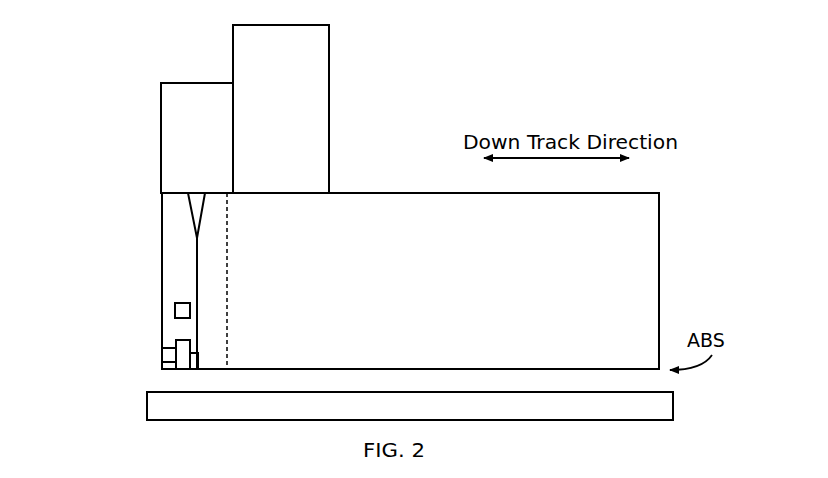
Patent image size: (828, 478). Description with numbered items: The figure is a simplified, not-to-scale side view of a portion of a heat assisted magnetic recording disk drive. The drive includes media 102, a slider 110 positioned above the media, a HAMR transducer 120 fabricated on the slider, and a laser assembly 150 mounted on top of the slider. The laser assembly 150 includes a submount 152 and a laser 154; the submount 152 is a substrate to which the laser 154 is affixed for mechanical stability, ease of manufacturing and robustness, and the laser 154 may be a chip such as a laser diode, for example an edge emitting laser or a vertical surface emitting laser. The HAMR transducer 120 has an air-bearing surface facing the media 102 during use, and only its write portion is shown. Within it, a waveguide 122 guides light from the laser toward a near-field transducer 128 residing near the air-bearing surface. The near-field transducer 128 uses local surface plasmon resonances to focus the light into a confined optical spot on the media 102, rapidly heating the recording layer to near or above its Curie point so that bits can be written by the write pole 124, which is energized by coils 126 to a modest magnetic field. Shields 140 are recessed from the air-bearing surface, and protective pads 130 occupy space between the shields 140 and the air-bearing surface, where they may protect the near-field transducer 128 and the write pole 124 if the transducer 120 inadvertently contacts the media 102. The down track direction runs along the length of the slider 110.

The media 102 is at (147, 395).
The slider 110 is at (659, 252).
The HAMR transducer 120 is at (228, 217).
The waveguide 122 is at (197, 280).
The write pole 124 is at (177, 340).
The coil 126 is at (176, 304).
The near-field transducer 128 is at (197, 369).
The protective pad 130 is at (162, 366).
The shield 140 is at (164, 348).
The laser assembly 150 is at (84, 112).
The submount 152 is at (331, 78).
The laser 154 is at (161, 92).